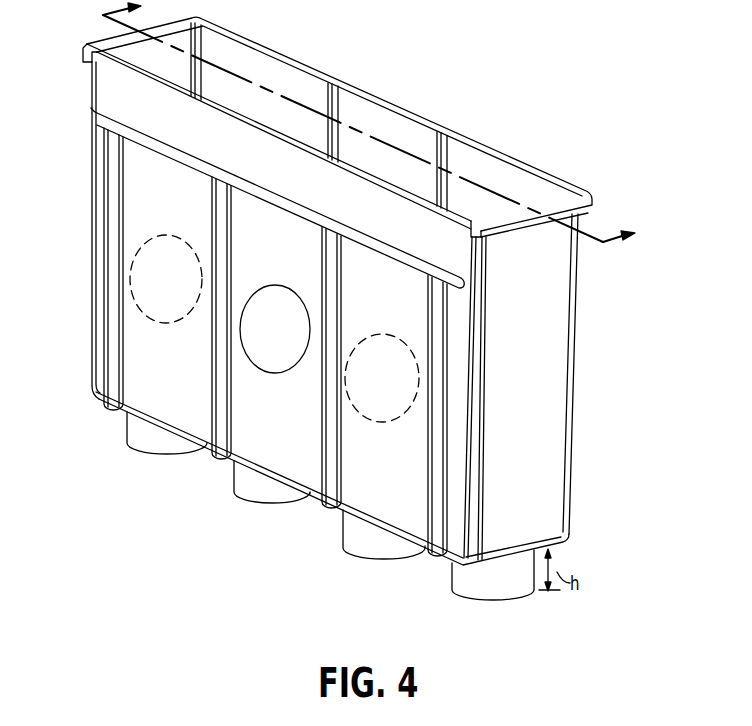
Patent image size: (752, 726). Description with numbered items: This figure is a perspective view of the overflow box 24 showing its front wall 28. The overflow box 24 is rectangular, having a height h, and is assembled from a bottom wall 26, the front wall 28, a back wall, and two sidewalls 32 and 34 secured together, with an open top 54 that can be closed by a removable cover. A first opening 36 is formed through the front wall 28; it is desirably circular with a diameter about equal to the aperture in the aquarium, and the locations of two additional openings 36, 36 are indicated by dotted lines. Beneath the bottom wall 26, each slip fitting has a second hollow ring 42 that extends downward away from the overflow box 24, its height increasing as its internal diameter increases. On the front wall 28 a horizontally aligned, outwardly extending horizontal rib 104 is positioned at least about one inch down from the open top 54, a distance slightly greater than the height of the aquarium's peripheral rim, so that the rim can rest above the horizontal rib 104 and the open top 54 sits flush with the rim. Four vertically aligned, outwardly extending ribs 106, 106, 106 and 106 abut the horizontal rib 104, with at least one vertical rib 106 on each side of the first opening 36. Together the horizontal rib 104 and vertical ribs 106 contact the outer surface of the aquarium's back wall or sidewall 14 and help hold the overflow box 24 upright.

The sidewall 14 is at (382, 122).
The overflow box 24 is at (557, 83).
The bottom wall 26 is at (553, 549).
The front wall 28 is at (270, 233).
The sidewall 32 is at (93, 210).
The sidewall 34 is at (532, 378).
The first opening 36 is at (158, 236).
The second hollow ring 42 is at (157, 448).
The open top 54 is at (252, 64).
The horizontal rib 104 is at (380, 241).
The vertical ribs 106 is at (124, 353).